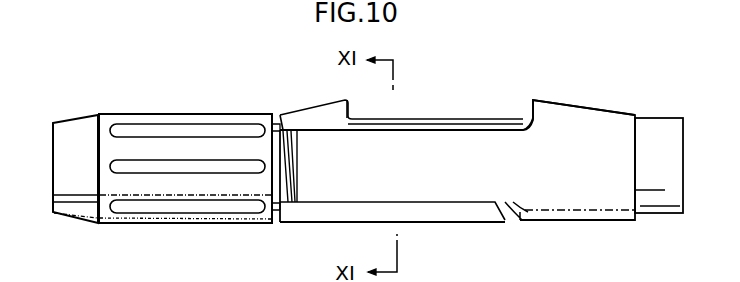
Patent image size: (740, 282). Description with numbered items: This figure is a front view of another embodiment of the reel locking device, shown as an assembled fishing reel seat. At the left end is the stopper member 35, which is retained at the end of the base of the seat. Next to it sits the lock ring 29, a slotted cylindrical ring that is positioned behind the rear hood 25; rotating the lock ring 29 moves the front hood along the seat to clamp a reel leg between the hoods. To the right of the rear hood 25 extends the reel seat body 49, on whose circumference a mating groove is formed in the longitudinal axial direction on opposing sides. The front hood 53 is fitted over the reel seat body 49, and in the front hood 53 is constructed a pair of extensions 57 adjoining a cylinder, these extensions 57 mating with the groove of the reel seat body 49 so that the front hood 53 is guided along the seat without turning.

The stopper member 35 is at (82, 123).
The lock ring 29 is at (173, 115).
The rear hood 25 is at (297, 103).
The extensions 57 is at (475, 142).
The front hood 53 is at (594, 104).
The reel seat body 49 is at (512, 214).